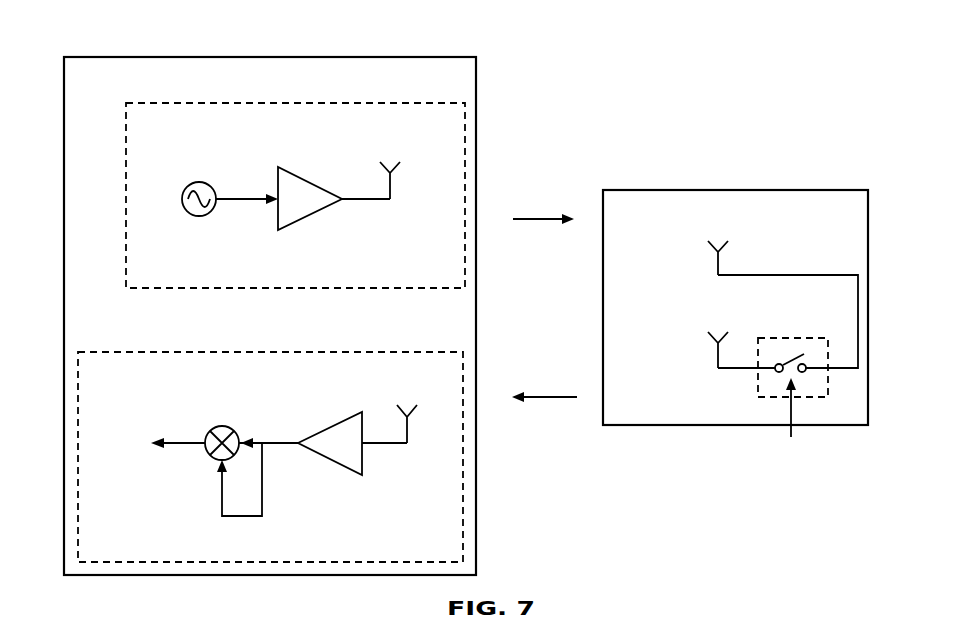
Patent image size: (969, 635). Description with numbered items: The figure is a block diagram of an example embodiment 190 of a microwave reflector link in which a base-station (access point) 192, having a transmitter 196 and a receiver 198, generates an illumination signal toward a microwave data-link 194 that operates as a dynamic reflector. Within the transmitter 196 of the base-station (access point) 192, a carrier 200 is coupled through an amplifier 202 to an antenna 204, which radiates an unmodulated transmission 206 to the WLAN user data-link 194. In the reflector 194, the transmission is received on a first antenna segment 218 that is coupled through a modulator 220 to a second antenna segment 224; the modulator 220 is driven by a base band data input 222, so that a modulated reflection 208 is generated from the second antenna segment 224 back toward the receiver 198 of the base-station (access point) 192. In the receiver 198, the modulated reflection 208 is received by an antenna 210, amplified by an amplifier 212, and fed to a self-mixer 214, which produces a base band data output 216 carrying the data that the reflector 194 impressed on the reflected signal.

The example embodiment 190 is at (121, 41).
The base-station (access point) 192 is at (308, 57).
The microwave data-link 194 is at (785, 190).
The transmitter 196 is at (330, 290).
The receiver 198 is at (188, 350).
The carrier 200 is at (198, 217).
The amplifier 202 is at (292, 170).
The antenna 204 is at (390, 201).
The unmodulated transmission 206 is at (520, 219).
The modulated reflection 208 is at (535, 397).
The antenna 210 is at (388, 446).
The amplifier 212 is at (337, 462).
The self-mixer 214 is at (238, 431).
The base band data output 216 is at (190, 440).
The first antenna segment 218 is at (724, 261).
The modulator 220 is at (756, 376).
The base band data input 222 is at (775, 491).
The second antenna segment 224 is at (708, 331).